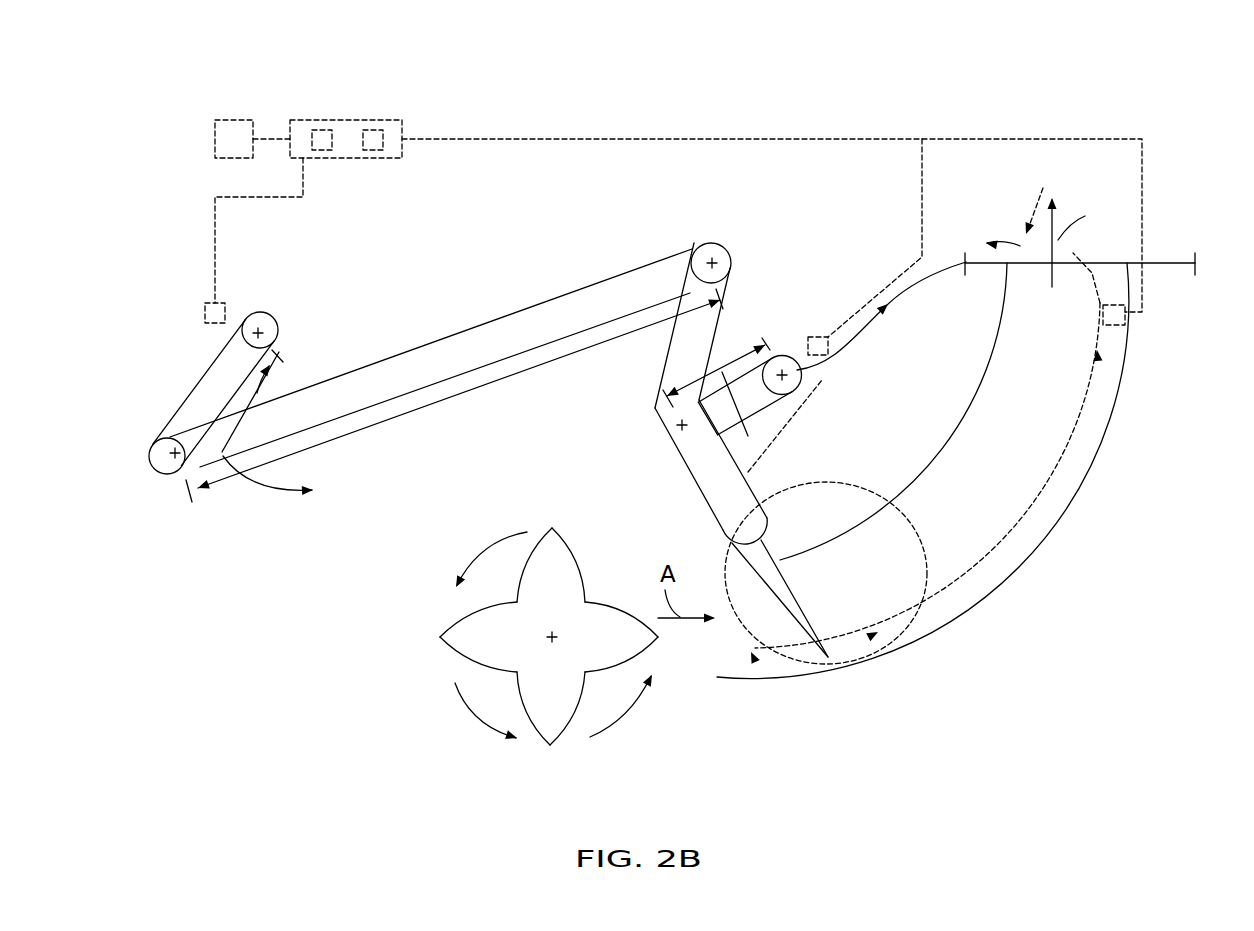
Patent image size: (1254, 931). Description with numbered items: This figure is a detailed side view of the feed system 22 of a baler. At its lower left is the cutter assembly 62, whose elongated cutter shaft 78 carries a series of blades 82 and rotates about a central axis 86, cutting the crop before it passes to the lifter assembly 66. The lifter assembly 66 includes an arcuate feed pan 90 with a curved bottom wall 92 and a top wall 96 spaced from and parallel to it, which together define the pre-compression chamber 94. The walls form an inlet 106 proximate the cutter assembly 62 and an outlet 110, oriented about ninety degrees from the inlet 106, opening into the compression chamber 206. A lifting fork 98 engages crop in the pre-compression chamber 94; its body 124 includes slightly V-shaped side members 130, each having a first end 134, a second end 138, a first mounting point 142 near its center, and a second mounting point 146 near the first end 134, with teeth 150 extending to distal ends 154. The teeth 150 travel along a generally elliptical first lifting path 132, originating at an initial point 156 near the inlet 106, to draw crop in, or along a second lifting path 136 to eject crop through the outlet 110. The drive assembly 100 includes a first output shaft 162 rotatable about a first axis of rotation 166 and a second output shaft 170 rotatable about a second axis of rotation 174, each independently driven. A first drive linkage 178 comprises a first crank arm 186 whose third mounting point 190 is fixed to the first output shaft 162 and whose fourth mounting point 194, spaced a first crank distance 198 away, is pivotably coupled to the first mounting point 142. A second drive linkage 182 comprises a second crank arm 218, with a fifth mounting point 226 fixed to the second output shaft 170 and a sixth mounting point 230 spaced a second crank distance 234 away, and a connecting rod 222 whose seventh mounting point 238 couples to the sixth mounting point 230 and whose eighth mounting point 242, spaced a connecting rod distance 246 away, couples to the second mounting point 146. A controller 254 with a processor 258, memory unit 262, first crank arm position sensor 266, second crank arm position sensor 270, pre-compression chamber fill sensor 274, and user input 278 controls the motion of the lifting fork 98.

The feed system 22 is at (467, 219).
The cutter assembly 62 is at (536, 661).
The lifter assembly 66 is at (953, 216).
The cutter shaft 78 is at (505, 670).
The blades 82 is at (462, 630).
The central axis 86 is at (583, 603).
The feed pan 90 is at (938, 442).
The bottom wall 92 is at (1063, 502).
The pre-compression chamber 94 is at (1080, 400).
The top wall 96 is at (947, 440).
The lifting fork 98 is at (736, 463).
The drive assembly 100 is at (553, 274).
The inlet 106 is at (735, 677).
The outlet 110 is at (1127, 277).
The body 124 is at (689, 464).
The side members 130 is at (776, 346).
The first lifting path 132 is at (929, 528).
The first end 134 is at (718, 250).
The second lifting path 136 is at (1039, 223).
The second end 138 is at (742, 537).
The first mounting point 142 is at (676, 424).
The second mounting point 146 is at (722, 290).
The teeth 150 is at (796, 637).
The distal end 154 is at (810, 650).
The initial point 156 is at (742, 675).
The first output shaft 162 is at (783, 349).
The first axis of rotation 166 is at (862, 333).
The second output shaft 170 is at (224, 365).
The second axis of rotation 174 is at (278, 328).
The first drive linkage 178 is at (793, 426).
The second drive linkage 182 is at (327, 408).
The first crank arm 186 is at (755, 397).
The third mounting point 190 is at (805, 392).
The fourth mounting point 194 is at (680, 433).
The first crank distance 198 is at (741, 417).
The compression chamber 206 is at (1168, 262).
The second crank arm 218 is at (218, 375).
The connecting rod 222 is at (431, 358).
The fifth mounting point 226 is at (255, 330).
The sixth mounting point 230 is at (175, 452).
The second crank distance 234 is at (285, 362).
The seventh mounting point 238 is at (166, 462).
The eighth mounting point 242 is at (705, 258).
The connecting rod distance 246 is at (453, 396).
The controller 254 is at (356, 106).
The processor 258 is at (322, 130).
The memory unit 262 is at (373, 130).
The first crank arm position sensor 266 is at (818, 337).
The second crank arm position sensor 270 is at (205, 312).
The pre-compression chamber fill sensor 274 is at (1103, 318).
The user input 278 is at (237, 120).